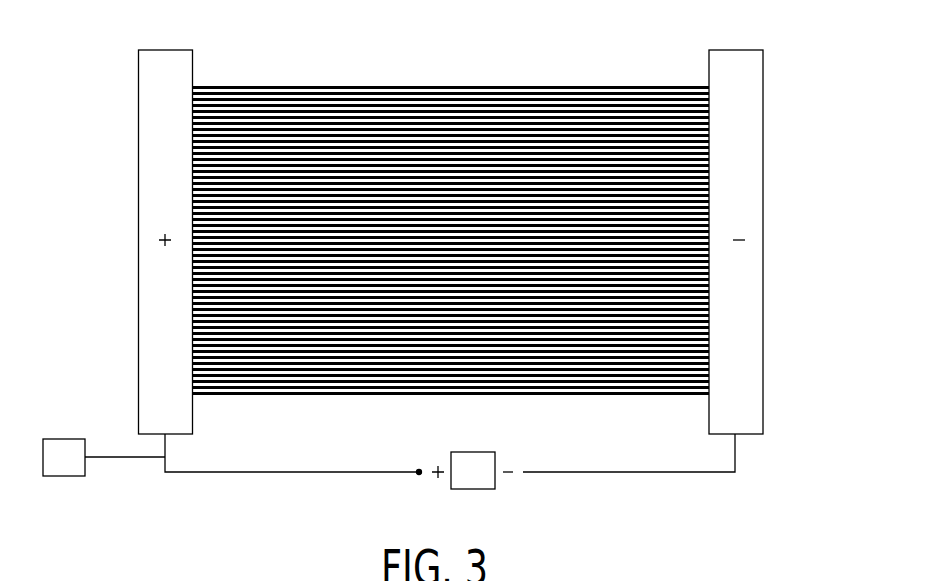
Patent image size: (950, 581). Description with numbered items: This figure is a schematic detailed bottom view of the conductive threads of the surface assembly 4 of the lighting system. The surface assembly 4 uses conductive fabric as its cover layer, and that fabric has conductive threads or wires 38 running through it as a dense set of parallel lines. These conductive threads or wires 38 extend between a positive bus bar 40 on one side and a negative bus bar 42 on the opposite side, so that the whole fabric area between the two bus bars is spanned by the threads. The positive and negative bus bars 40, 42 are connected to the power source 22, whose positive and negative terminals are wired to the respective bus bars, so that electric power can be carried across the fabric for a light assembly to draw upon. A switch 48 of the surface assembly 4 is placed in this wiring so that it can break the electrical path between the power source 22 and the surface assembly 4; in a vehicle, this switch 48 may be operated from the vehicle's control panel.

The surface assembly 4 is at (429, 234).
The power source 22 is at (450, 461).
The conductive threads or wires 38 is at (397, 100).
The positive bus bar 40 is at (141, 143).
The negative bus bar 42 is at (737, 135).
The switch 48 is at (56, 440).